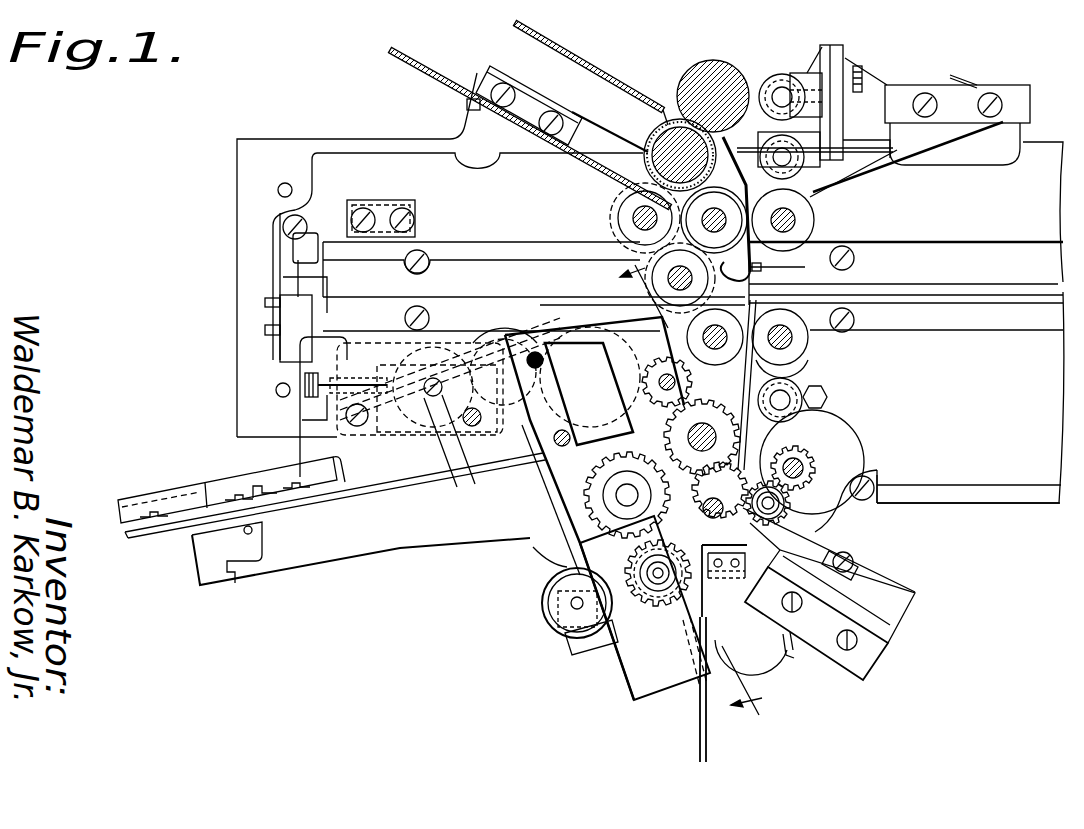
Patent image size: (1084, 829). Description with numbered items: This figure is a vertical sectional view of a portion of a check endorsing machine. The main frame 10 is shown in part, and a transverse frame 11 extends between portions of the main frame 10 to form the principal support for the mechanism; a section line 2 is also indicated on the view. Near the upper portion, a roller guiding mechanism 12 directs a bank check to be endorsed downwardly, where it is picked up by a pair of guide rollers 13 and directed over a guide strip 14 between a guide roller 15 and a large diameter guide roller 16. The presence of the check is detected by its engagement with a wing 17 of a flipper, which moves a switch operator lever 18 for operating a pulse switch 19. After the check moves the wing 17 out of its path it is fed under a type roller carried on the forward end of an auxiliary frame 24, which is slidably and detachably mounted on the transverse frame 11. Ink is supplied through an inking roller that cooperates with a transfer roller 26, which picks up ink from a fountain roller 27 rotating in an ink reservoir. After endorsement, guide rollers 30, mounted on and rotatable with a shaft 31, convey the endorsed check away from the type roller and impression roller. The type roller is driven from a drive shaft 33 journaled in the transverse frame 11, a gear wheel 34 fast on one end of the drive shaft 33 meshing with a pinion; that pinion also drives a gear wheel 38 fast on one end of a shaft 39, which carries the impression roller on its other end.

The section line 2 is at (681, 504).
The main frame 10 is at (257, 147).
The transverse frame 11 is at (598, 320).
The roller guiding mechanism 12 is at (664, 70).
The guide rollers 13 is at (710, 312).
The guide strip 14 is at (818, 352).
The guide roller 15 is at (731, 415).
The large diameter guide roller 16 is at (840, 446).
The wing 17 is at (730, 476).
The switch operator lever 18 is at (820, 538).
The pulse switch 19 is at (860, 608).
The auxiliary frame 24 is at (387, 547).
The transfer roller 26 is at (496, 335).
The fountain roller 27 is at (440, 355).
The guide rollers 30 is at (547, 604).
The shaft 31 is at (577, 605).
The drive shaft 33 is at (620, 496).
The gear wheel 34 is at (587, 483).
The gear wheel 38 is at (650, 607).
The shaft 39 is at (658, 580).